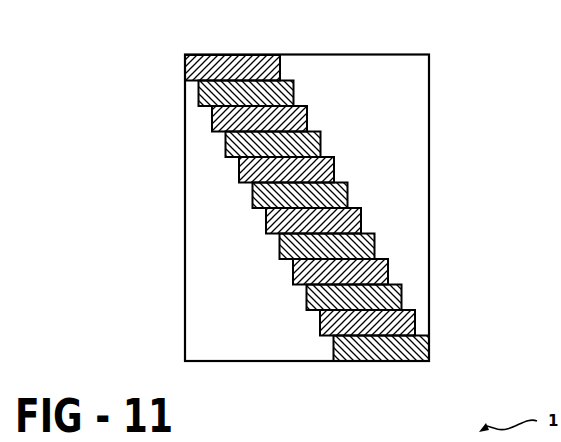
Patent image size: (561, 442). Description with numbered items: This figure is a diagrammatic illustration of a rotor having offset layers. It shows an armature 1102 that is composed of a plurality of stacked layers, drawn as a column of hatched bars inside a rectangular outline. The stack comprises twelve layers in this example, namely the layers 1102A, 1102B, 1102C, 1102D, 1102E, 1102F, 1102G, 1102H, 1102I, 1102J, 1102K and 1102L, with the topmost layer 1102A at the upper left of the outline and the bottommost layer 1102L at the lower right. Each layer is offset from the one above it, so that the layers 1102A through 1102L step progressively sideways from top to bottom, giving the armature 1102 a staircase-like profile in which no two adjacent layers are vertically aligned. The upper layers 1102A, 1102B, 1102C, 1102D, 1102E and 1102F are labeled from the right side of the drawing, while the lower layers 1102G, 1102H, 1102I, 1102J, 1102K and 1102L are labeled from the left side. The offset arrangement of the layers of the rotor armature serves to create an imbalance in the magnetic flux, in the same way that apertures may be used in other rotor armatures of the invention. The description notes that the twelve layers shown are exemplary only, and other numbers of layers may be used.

The armature 1102 is at (132, 31).
The layer 1102A is at (280, 71).
The layer 1102B is at (293, 95).
The layer 1102C is at (307, 120).
The layer 1102D is at (320, 147).
The layer 1102E is at (334, 172).
The layer 1102F is at (347, 198).
The layer 1102G is at (266, 220).
The layer 1102H is at (280, 246).
The layer 1102I is at (293, 272).
The layer 1102J is at (306, 298).
The layer 1102K is at (320, 323).
The layer 1102L is at (334, 350).